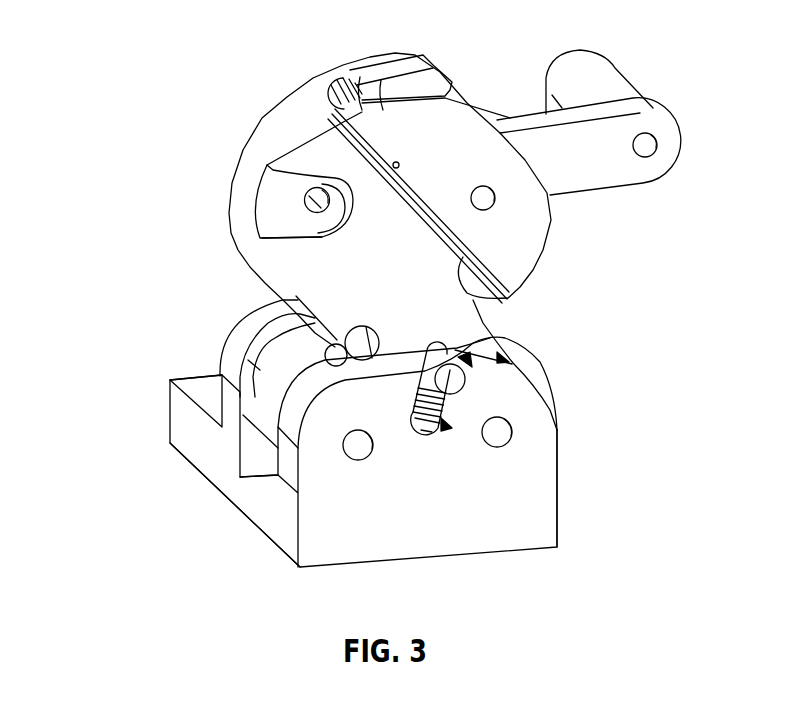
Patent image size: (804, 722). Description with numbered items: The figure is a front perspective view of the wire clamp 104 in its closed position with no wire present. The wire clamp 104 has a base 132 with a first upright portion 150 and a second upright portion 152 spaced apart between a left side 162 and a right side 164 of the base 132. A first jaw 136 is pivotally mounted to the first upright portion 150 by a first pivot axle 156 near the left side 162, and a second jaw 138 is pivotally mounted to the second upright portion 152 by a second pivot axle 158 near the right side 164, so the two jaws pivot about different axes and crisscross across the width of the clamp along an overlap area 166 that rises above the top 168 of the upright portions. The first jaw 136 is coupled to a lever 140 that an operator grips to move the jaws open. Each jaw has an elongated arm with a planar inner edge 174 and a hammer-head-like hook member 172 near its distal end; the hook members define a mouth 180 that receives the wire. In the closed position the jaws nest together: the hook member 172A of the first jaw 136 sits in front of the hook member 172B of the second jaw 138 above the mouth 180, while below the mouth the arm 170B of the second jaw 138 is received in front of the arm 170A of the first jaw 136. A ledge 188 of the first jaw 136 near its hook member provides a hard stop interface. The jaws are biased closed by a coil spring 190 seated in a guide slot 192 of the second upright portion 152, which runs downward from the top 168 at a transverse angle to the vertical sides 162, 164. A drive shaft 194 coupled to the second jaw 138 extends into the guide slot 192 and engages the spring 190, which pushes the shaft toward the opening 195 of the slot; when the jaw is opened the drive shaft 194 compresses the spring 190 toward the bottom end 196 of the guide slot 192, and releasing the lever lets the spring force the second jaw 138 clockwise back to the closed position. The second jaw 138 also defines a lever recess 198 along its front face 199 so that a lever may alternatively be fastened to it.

The wire clamp 104 is at (108, 107).
The base 132 is at (197, 457).
The first jaw 136 is at (540, 222).
The second jaw 138 is at (240, 148).
The lever 140 is at (643, 126).
The first upright portion 150 is at (230, 390).
The second upright portion 152 is at (288, 488).
The first pivot axle 156 is at (358, 448).
The second pivot axle 158 is at (500, 433).
The left side 162 is at (287, 522).
The right side 164 is at (557, 512).
The overlap area 166 is at (364, 290).
The top 168 is at (512, 366).
The arm of the first jaw 170A is at (315, 318).
The arm of the second jaw 170B is at (343, 318).
The hook member 172 is at (358, 78).
The hook member of the first jaw 172A is at (380, 77).
The hook member of the second jaw 172B is at (407, 65).
The inner edge 174 is at (450, 228).
The mouth 180 is at (392, 161).
The ledge 188 is at (474, 301).
The spring 190 is at (452, 393).
The guide slot 192 is at (449, 428).
The drive shaft 194 is at (468, 372).
The opening 195 is at (472, 350).
The bottom end 196 is at (426, 432).
The lever recess 198 is at (265, 219).
The front face 199 is at (297, 264).